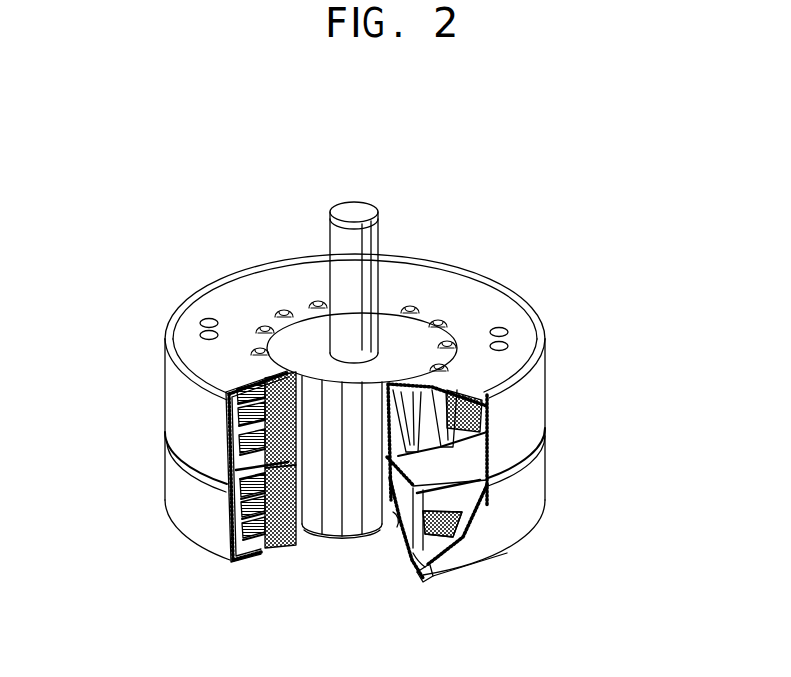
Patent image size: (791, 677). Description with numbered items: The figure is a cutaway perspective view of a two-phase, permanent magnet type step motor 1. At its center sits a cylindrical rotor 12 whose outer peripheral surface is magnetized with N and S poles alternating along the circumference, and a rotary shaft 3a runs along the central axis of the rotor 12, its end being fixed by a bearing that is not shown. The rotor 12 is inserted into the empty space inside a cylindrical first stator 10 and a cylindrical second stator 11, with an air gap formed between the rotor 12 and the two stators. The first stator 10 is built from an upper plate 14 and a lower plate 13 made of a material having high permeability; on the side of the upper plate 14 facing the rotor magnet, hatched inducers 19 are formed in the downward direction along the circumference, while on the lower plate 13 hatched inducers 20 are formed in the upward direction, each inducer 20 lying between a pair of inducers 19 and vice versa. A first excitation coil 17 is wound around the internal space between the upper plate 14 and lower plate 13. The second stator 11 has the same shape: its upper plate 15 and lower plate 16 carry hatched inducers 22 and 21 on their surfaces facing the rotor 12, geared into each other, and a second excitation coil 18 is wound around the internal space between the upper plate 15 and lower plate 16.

The motor 1 is at (532, 278).
The rotary shaft 3a is at (372, 245).
The first stator 10 is at (177, 385).
The second stator 11 is at (183, 503).
The rotor 12 is at (335, 512).
The lower plate 13 is at (470, 455).
The upper plate 14 is at (548, 388).
The upper plate 15 is at (413, 496).
The lower plate 16 is at (428, 549).
The first excitation coil 17 is at (227, 443).
The second excitation coil 18 is at (222, 556).
The inducers 19 is at (400, 400).
The inducers 20 is at (386, 430).
The inducers 21 is at (358, 538).
The inducers 22 is at (410, 555).